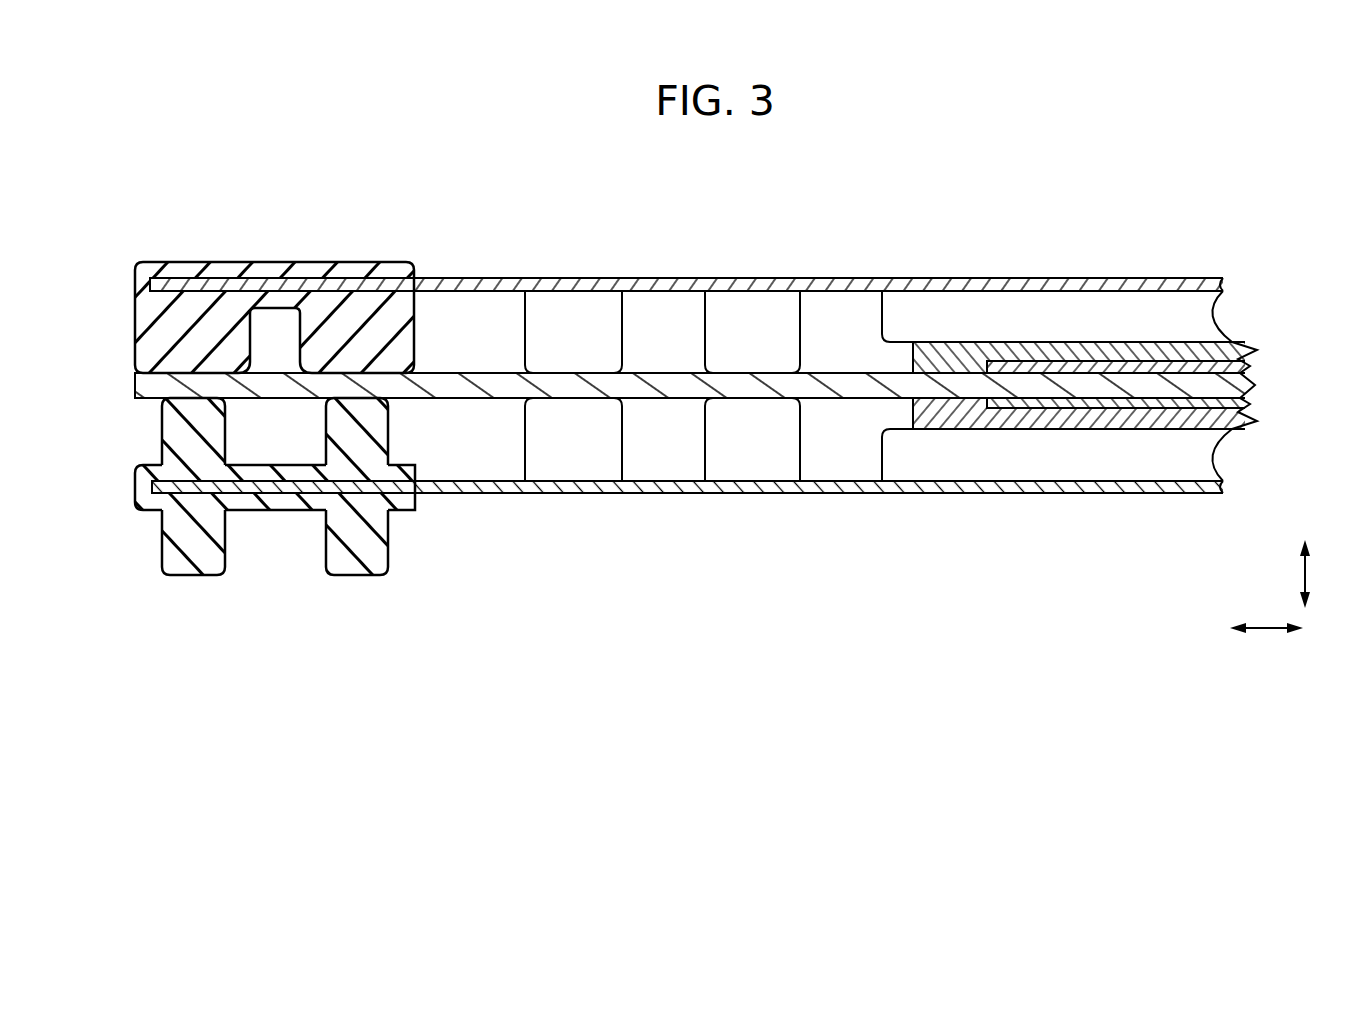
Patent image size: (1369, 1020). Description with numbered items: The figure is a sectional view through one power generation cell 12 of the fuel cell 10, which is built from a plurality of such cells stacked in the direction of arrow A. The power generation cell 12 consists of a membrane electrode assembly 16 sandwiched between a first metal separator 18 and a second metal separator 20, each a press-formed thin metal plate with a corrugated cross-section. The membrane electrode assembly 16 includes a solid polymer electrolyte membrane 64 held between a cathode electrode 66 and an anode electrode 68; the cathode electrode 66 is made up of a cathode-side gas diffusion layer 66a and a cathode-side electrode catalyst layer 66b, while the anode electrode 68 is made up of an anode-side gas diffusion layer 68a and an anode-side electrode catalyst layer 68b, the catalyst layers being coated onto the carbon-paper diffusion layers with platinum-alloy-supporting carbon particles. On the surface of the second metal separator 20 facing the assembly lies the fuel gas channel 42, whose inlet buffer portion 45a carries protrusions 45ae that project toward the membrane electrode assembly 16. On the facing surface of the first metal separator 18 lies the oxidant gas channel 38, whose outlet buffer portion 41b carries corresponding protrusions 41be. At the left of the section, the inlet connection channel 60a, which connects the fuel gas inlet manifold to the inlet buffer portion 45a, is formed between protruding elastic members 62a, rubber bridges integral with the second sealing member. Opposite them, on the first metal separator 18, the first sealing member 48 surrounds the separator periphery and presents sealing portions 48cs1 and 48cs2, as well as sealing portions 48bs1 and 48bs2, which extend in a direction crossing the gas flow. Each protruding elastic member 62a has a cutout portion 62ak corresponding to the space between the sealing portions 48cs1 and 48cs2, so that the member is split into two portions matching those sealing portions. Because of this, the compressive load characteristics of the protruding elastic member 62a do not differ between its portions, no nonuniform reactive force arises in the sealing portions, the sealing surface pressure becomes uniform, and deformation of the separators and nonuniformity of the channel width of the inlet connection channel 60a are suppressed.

The fuel cell 10 is at (787, 154).
The power generation cell 12 is at (1318, 255).
The membrane electrode assembly 16 is at (1262, 388).
The first metal separator 18 is at (1220, 502).
The second metal separator 20 is at (1220, 270).
The oxidant gas channel 38 is at (962, 458).
The outlet buffer portion 41b is at (656, 462).
The protrusions 41be is at (598, 462).
The fuel gas channel 42 is at (962, 302).
The inlet buffer portion 45a is at (650, 308).
The protrusions 45ae is at (598, 312).
The first sealing member 48 is at (132, 513).
The sealing portion 48bs1 is at (373, 436).
The sealing portion 48bs2 is at (173, 436).
The sealing portion 48cs1 is at (352, 566).
The sealing portion 48cs2 is at (187, 566).
The inlet connection channel 60a is at (432, 333).
The protruding elastic member 62a is at (188, 357).
The cutout portion 62ak is at (270, 335).
The solid polymer electrolyte membrane 64 is at (847, 385).
The cathode electrode 66 is at (1025, 558).
The cathode-side gas diffusion layer 66a is at (1093, 415).
The cathode-side electrode catalyst layer 66b is at (1043, 432).
The anode electrode 68 is at (1018, 224).
The anode-side gas diffusion layer 68a is at (1092, 368).
The anode-side electrode catalyst layer 68b is at (1046, 355).